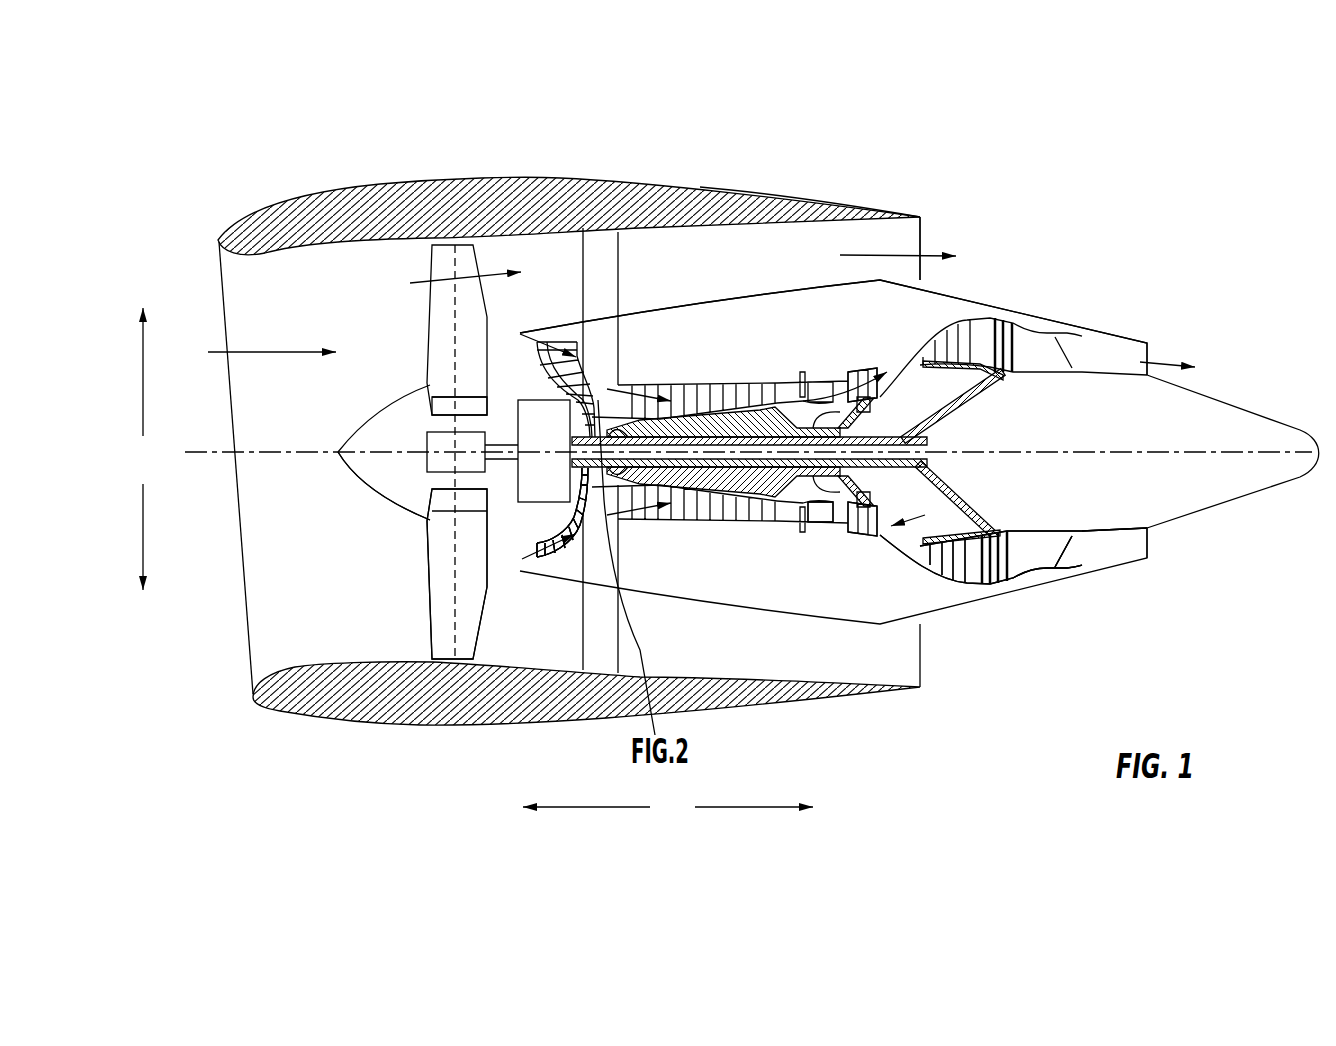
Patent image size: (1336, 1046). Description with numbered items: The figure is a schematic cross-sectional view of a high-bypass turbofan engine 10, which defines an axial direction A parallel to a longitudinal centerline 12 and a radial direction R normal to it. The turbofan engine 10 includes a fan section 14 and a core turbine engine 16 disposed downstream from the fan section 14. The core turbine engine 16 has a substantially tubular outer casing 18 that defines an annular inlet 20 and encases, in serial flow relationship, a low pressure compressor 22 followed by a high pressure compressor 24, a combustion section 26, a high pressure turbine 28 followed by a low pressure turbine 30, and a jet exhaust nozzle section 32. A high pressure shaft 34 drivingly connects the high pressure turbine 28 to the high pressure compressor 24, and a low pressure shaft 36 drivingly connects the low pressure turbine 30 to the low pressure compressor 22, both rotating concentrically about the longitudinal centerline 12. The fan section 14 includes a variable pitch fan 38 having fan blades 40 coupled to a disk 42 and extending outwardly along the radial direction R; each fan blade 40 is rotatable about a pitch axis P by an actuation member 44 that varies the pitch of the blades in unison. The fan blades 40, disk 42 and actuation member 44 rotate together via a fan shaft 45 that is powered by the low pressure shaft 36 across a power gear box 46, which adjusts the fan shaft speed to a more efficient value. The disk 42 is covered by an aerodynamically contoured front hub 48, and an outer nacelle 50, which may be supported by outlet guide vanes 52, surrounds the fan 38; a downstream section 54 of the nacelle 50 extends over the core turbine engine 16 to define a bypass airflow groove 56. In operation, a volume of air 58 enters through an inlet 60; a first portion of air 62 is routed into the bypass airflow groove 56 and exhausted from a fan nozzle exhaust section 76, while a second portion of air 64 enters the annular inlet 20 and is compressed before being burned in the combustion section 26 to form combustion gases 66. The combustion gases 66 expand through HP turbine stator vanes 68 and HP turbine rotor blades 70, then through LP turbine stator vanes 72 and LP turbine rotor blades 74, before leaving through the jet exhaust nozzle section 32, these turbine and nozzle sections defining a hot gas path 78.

The turbofan engine 10 is at (1064, 197).
The longitudinal centerline 12 is at (1088, 446).
The fan section 14 is at (388, 264).
The core turbine engine 16 is at (740, 340).
The outer casing 18 is at (777, 615).
The annular inlet 20 is at (522, 559).
The low pressure compressor 22 is at (573, 514).
The high pressure compressor 24 is at (650, 510).
The combustion section 26 is at (820, 522).
The high pressure turbine 28 is at (942, 512).
The low pressure turbine 30 is at (1004, 584).
The jet exhaust nozzle section 32 is at (1065, 562).
The high pressure shaft 34 is at (850, 421).
The low pressure shaft 36 is at (942, 414).
The variable pitch fan 38 is at (396, 505).
The fan blades 40 is at (427, 600).
The disk 42 is at (447, 407).
The actuation member 44 is at (427, 433).
The fan shaft 45 is at (497, 447).
The power gear box 46 is at (553, 415).
The front hub 48 is at (353, 470).
The outer nacelle 50 is at (477, 723).
The outlet guide vanes 52 is at (620, 260).
The downstream section 54 is at (867, 207).
The bypass airflow groove 56 is at (798, 272).
The volume of air 58 is at (270, 347).
The inlet 60 is at (250, 663).
The first portion of air 62 is at (448, 283).
The second portion of air 64 is at (510, 338).
The combustion gases 66 is at (863, 375).
The HP turbine stator vanes 68 is at (838, 530).
The HP turbine rotor blades 70 is at (923, 480).
The LP turbine stator vanes 72 is at (930, 565).
The LP turbine rotor blades 74 is at (940, 572).
The fan nozzle exhaust section 76 is at (910, 240).
The hot gas path 78 is at (907, 355).
The pitch axis P is at (462, 258).
The radial direction R is at (143, 449).
The axial direction A is at (668, 805).